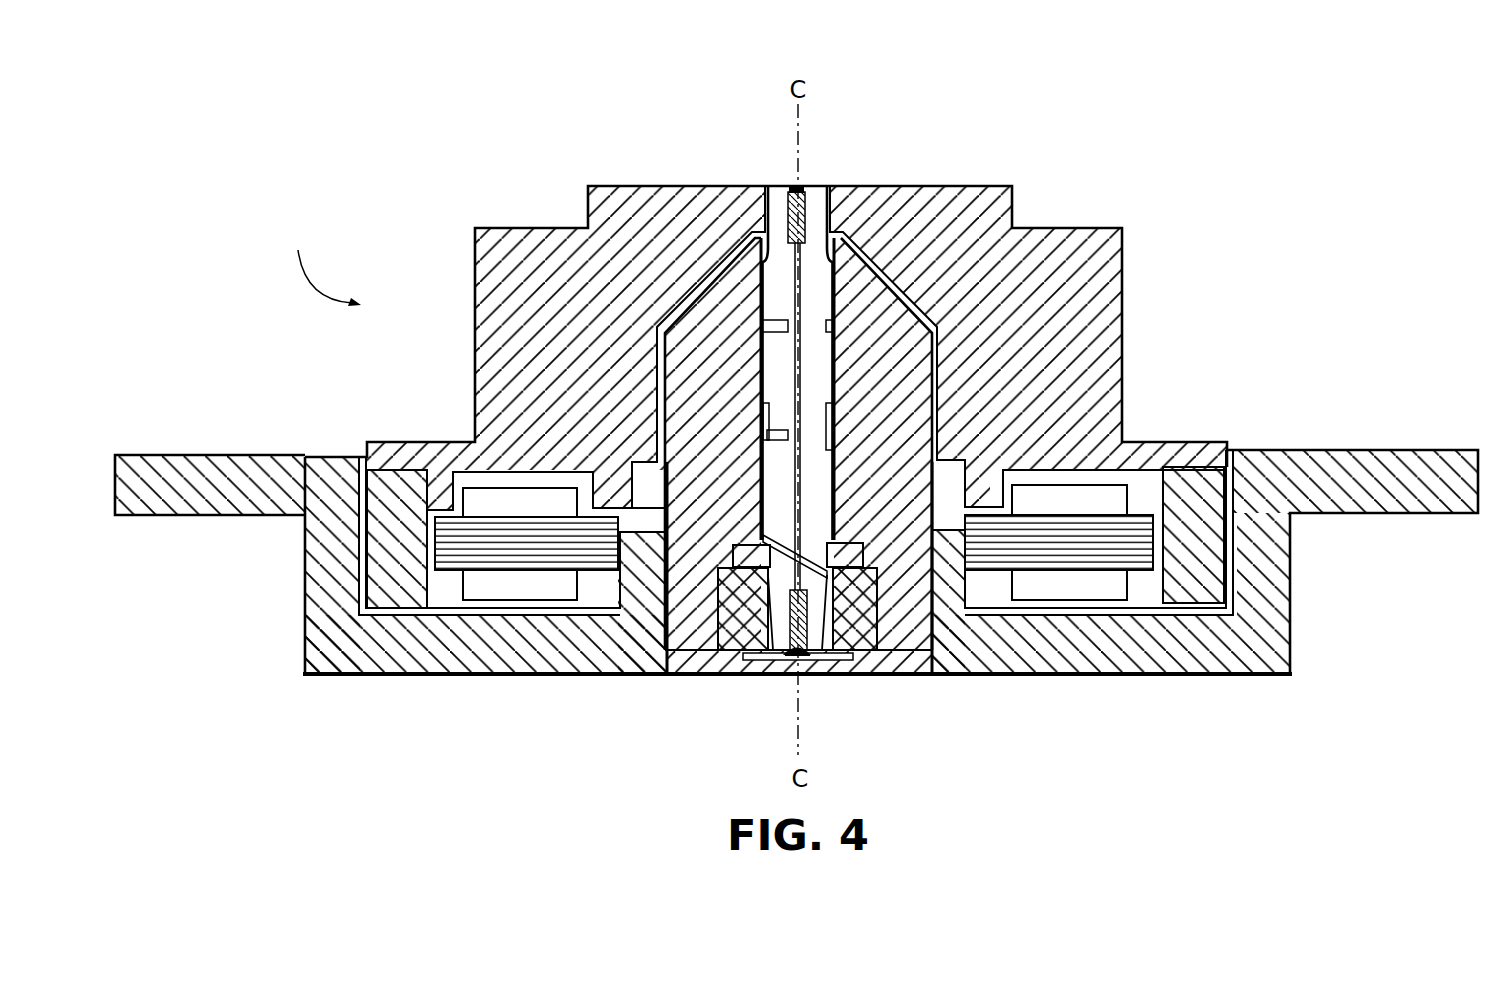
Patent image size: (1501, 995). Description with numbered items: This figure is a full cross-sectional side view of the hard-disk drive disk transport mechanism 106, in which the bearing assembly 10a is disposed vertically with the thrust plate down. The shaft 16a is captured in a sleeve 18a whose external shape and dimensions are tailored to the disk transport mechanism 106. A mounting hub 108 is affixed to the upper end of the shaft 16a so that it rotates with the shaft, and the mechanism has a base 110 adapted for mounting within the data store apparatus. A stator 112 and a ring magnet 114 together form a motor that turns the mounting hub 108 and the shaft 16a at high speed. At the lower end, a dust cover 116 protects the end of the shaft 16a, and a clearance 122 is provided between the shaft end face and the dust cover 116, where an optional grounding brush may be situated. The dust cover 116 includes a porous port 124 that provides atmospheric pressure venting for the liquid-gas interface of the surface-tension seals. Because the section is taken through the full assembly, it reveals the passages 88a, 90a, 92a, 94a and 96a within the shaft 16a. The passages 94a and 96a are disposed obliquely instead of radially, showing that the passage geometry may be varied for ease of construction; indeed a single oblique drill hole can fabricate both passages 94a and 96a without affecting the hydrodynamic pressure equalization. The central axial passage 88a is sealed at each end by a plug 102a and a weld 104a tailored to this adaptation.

The disk transport mechanism 106 is at (321, 263).
The mounting hub 108 is at (924, 186).
The base 110 is at (604, 677).
The stator 112 is at (543, 500).
The ring magnet 114 is at (1207, 515).
The dust cover 116 is at (909, 676).
The clearance 122 is at (740, 673).
The porous port 124 is at (802, 674).
The bearing assembly 10a is at (819, 186).
The shaft 16a is at (770, 375).
The sleeve 18a is at (716, 283).
The central axial passage 88a is at (798, 388).
The passage 90a is at (760, 325).
The passage 92a is at (762, 430).
The oblique passage 94a is at (755, 540).
The oblique passage 96a is at (845, 546).
The plug 102a is at (790, 218).
The weld 104a is at (792, 188).